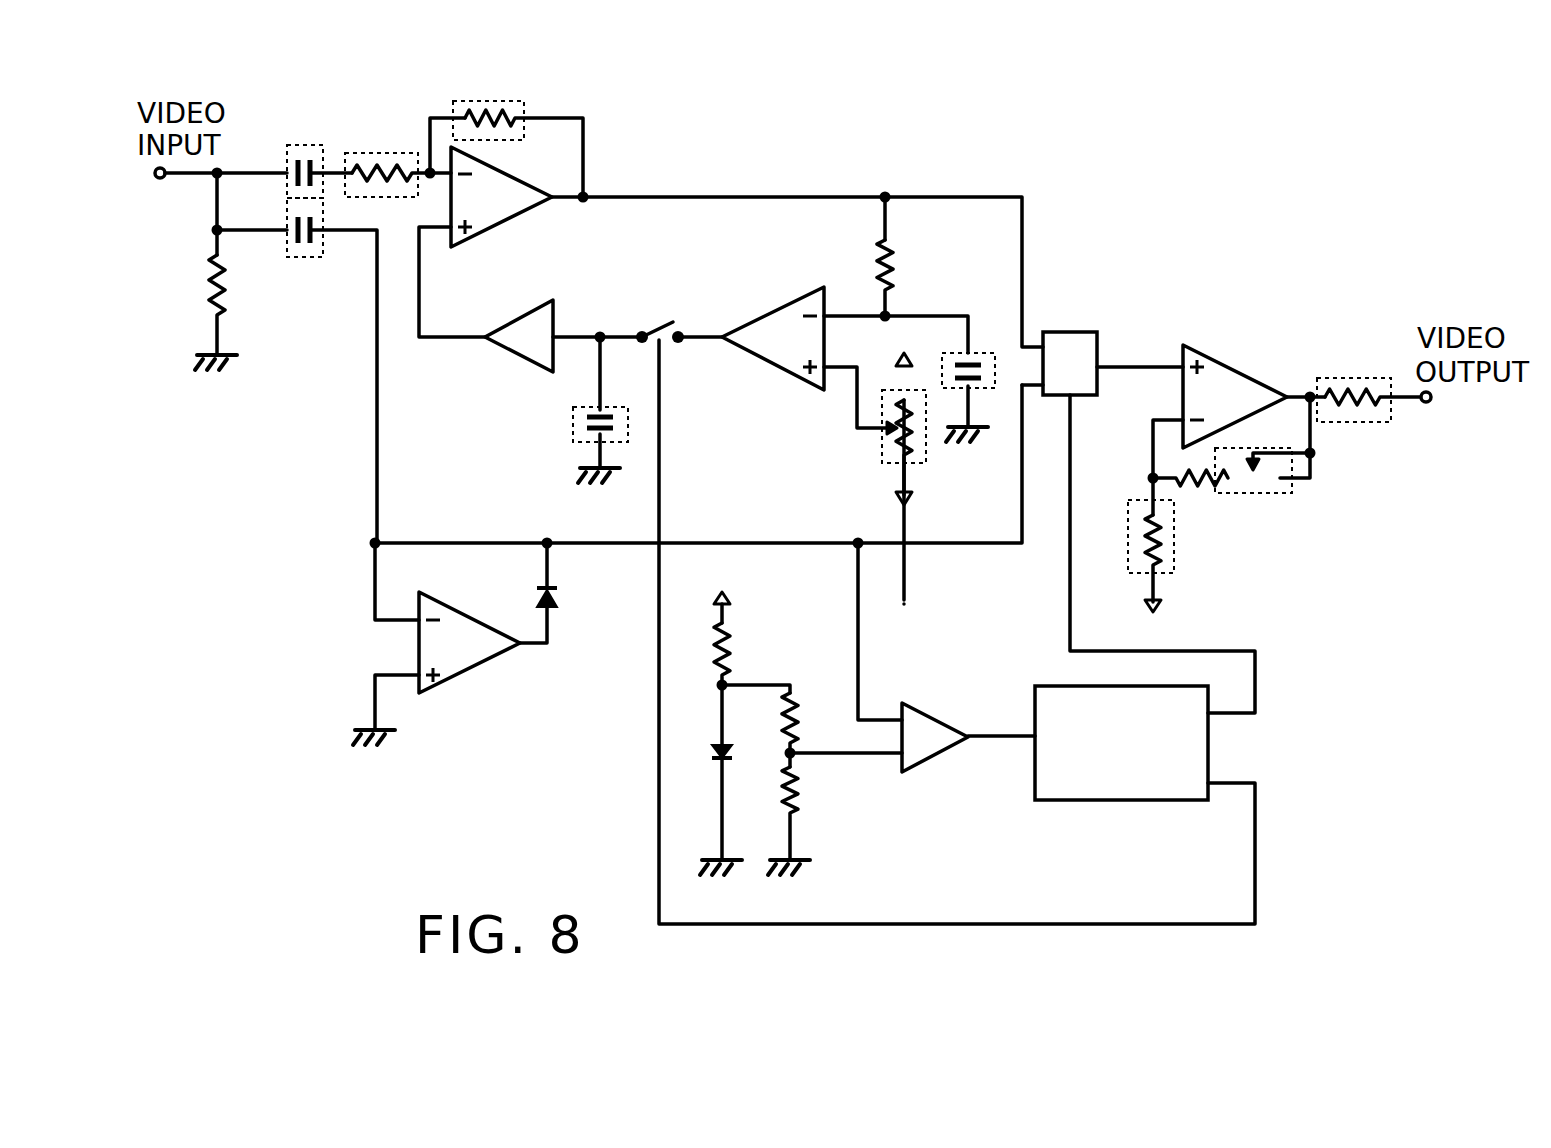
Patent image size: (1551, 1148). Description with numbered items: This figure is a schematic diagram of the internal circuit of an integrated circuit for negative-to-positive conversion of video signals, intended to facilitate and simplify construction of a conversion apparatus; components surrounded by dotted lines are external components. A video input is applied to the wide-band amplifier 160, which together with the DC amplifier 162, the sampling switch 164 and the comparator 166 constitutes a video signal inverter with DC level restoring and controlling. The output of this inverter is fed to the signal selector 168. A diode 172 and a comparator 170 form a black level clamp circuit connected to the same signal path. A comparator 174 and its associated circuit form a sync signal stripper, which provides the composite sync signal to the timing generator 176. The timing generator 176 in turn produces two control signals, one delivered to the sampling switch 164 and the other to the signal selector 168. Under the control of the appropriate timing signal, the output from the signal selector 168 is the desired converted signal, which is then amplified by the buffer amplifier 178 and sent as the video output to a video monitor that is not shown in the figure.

The wide-band amplifier 160 is at (528, 180).
The DC amplifier 162 is at (558, 313).
The sampling switch 164 is at (662, 328).
The comparator 166 is at (788, 372).
The signal selector 168 is at (1097, 383).
The comparator 170 is at (477, 667).
The diode 172 is at (550, 602).
The comparator 174 is at (930, 715).
The timing generator 176 is at (1095, 800).
The buffer amplifier 178 is at (1230, 365).